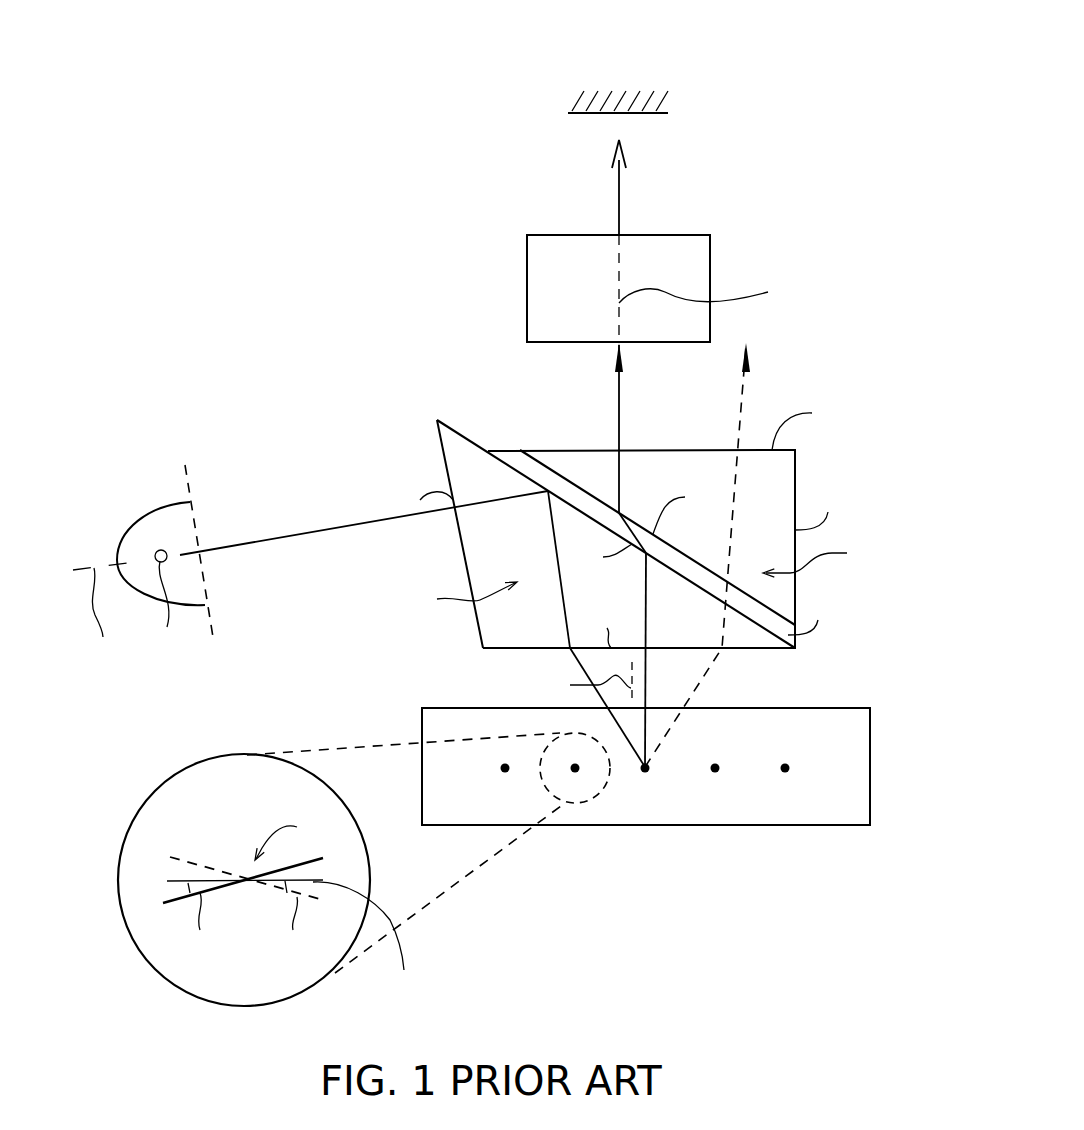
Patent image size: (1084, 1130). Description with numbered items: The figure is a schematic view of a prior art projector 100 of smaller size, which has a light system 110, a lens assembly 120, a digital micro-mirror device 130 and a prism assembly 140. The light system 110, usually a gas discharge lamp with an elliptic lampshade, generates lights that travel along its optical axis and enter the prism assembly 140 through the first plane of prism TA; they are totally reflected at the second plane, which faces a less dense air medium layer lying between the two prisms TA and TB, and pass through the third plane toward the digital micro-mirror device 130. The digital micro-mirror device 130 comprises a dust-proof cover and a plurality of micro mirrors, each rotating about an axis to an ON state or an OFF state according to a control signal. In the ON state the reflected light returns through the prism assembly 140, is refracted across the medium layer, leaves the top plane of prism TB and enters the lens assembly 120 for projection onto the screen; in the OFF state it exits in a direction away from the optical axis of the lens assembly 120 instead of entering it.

The projector 100 is at (785, 55).
The light system 110 is at (204, 485).
The lens assembly 120 is at (688, 235).
The digital micro-mirror device 130 is at (848, 708).
The prism assembly 140 is at (842, 461).